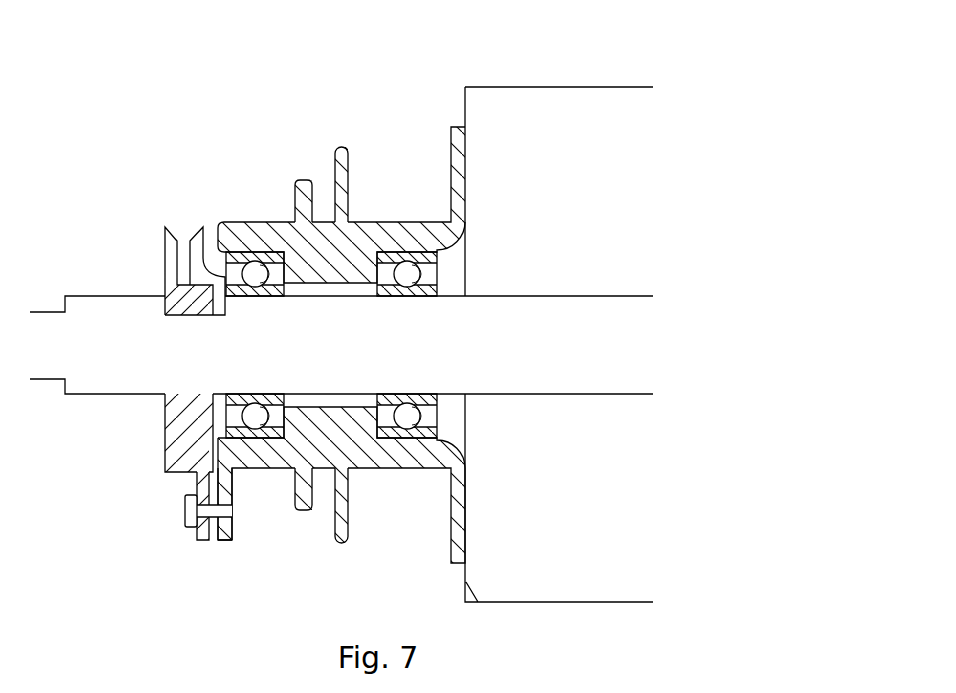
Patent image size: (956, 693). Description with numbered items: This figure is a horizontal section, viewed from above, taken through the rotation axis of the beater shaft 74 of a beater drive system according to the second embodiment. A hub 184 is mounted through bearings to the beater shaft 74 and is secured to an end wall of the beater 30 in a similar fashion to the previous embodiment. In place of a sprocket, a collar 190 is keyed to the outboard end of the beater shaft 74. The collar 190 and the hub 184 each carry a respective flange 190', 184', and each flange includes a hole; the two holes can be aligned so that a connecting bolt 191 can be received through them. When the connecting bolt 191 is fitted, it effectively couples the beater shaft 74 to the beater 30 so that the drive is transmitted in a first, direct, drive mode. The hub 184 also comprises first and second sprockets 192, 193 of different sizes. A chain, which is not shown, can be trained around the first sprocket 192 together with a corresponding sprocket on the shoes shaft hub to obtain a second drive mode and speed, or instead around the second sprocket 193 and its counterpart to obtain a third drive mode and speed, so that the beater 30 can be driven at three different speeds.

The beater 30 is at (565, 87).
The beater shaft 74 is at (575, 310).
The hub 184 is at (341, 345).
The flange 184' is at (261, 538).
The collar 190 is at (144, 383).
The flange 190' is at (171, 545).
The connecting bolt 191 is at (185, 508).
The first sprocket 192 is at (302, 187).
The second sprocket 193 is at (342, 163).